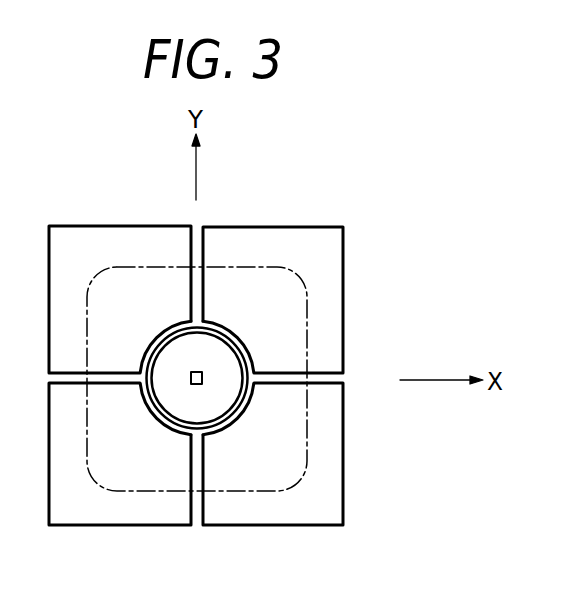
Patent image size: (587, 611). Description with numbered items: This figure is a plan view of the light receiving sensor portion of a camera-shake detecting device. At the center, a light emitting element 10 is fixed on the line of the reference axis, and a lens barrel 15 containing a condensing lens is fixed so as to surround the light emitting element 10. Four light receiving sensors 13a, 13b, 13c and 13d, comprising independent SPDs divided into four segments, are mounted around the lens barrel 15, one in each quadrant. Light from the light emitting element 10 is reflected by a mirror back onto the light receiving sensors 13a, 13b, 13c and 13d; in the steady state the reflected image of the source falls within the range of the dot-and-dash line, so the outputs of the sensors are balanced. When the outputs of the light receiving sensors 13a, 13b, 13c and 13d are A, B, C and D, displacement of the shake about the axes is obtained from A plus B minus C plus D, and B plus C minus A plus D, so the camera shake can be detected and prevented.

The light emitting element 10 is at (204, 378).
The lens barrel 15 is at (217, 322).
The light receiving sensor 13a is at (105, 247).
The light receiving sensor 13b is at (322, 250).
The light receiving sensor 13c is at (293, 505).
The light receiving sensor 13d is at (108, 505).